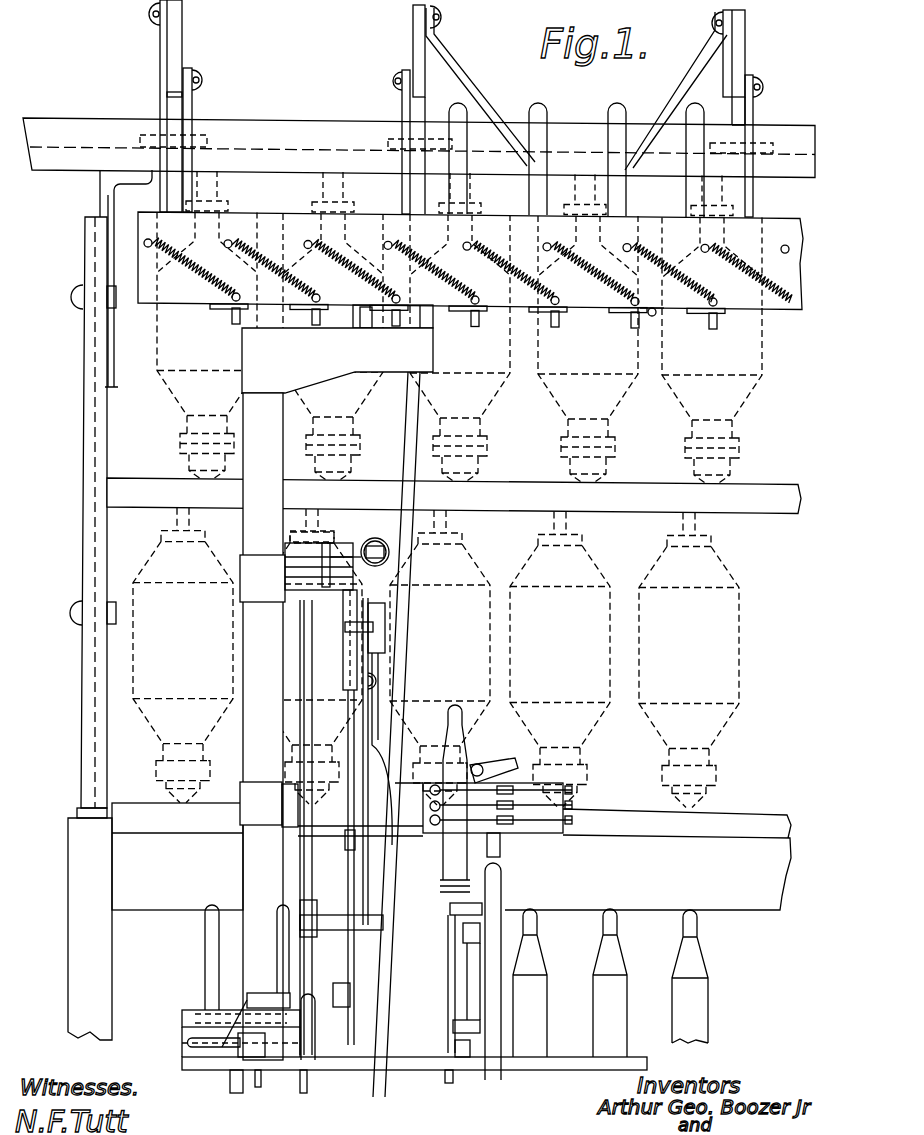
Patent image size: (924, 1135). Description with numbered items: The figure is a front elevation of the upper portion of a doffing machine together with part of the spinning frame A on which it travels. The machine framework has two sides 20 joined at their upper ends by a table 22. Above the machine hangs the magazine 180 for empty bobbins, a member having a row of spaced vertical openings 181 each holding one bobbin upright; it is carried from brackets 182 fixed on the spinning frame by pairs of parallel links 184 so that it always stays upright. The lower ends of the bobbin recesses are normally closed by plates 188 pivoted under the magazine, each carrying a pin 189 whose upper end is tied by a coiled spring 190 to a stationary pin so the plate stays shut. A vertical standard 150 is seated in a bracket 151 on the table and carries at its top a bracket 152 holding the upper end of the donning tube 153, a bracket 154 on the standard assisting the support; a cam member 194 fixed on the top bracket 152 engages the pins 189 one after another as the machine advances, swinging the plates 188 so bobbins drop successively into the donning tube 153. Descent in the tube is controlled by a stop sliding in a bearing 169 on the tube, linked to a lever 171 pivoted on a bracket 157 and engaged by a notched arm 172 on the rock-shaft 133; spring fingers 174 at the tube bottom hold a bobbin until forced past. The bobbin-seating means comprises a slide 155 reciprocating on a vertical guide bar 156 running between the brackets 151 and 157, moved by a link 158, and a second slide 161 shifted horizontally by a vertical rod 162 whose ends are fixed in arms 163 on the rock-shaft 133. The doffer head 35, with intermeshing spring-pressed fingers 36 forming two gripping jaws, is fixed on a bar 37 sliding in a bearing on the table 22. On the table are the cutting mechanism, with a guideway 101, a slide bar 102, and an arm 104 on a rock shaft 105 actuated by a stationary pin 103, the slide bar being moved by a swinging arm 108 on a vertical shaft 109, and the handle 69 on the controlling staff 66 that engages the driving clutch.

The spinning frame A is at (257, 128).
The brackets 182 is at (418, 47).
The parallel links 184 is at (187, 108).
The vertical openings 181 is at (330, 206).
The magazine 180 is at (147, 267).
The coiled spring 190 is at (397, 246).
The pin 189 is at (233, 320).
The plates 188 is at (645, 316).
The cam member 194 is at (428, 323).
The bracket 152 is at (337, 360).
The vertical standard 150 is at (263, 668).
The donning tube 153 is at (407, 420).
The arm 172 is at (297, 553).
The bracket 157 is at (293, 587).
The lever 171 is at (342, 550).
The bearing 169 is at (378, 537).
The rock-shaft 133 is at (307, 715).
The second slide 161 is at (353, 633).
The arms 163 is at (346, 622).
The slide 155 is at (357, 673).
The vertical rod 162 is at (365, 662).
The spring fingers 174 is at (395, 843).
The vertical guide bar 156 is at (350, 840).
The bracket 154 is at (290, 815).
The doffer head 35 is at (485, 787).
The spring-pressed fingers 36 is at (575, 821).
The bar 37 is at (493, 900).
The table 22 is at (563, 1063).
The link 158 is at (380, 958).
The handle 69 is at (327, 1042).
The controlling staff 66 is at (307, 1093).
The slide bar 102 is at (395, 1025).
The rock shaft 105 is at (470, 1005).
The arm 104 is at (460, 1042).
The stationary pin 103 is at (467, 1057).
The bracket 151 is at (250, 1007).
The guideway 101 is at (192, 1015).
The horizontally swinging arm 108 is at (197, 1043).
The sides 20 is at (233, 1090).
The vertical shaft 109 is at (253, 1087).